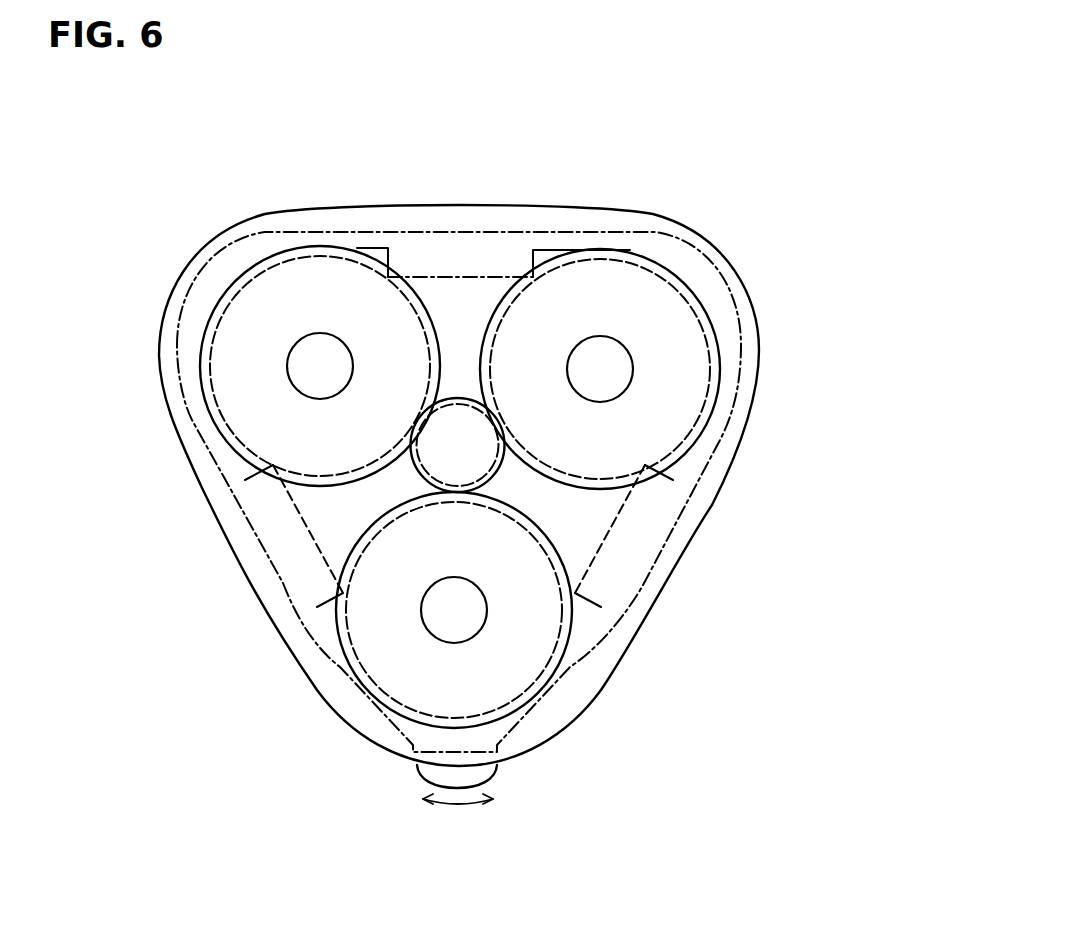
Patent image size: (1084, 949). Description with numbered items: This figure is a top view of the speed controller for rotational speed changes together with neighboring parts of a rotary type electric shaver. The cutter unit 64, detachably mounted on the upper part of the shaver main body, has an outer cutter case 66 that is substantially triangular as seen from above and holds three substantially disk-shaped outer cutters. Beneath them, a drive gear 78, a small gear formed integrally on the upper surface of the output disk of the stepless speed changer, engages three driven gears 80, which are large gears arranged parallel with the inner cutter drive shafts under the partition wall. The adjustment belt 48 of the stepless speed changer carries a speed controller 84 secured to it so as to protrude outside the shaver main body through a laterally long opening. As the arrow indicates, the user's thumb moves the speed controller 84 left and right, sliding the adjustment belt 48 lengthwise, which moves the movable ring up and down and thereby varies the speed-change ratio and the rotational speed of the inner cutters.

The cutter unit 64 is at (812, 256).
The outer cutter case 66 is at (704, 518).
The adjustment belt 48 is at (633, 577).
The driven gears 80 is at (418, 306).
The drive gear 78 is at (413, 443).
The speed controller 84 is at (493, 768).